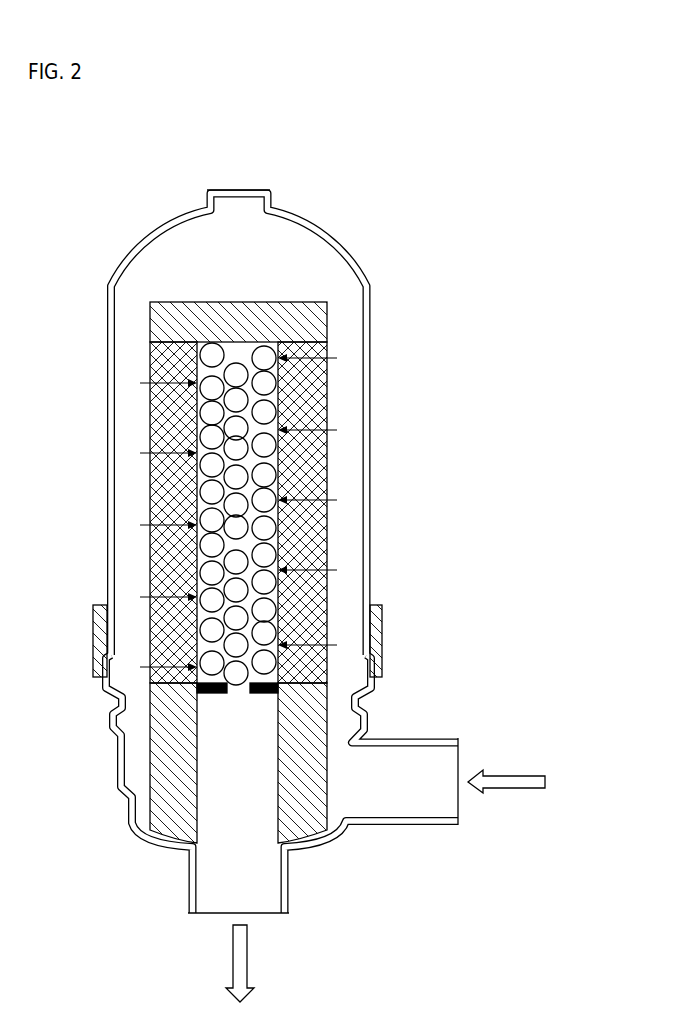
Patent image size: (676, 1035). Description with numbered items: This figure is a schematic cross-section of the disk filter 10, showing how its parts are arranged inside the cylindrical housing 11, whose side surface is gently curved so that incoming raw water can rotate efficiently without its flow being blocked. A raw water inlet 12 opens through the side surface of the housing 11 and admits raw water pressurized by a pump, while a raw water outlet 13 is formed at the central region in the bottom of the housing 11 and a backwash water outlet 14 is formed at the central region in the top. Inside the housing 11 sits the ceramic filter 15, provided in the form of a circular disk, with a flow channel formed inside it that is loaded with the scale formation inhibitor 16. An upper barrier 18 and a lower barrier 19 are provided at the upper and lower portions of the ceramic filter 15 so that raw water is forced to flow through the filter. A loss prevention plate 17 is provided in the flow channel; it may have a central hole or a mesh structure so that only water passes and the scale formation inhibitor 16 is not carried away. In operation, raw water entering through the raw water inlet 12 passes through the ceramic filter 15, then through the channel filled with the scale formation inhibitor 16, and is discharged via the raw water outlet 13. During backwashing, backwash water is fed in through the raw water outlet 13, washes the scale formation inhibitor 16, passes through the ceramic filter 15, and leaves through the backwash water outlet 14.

The disk filter 10 is at (362, 133).
The housing 11 is at (343, 248).
The raw water inlet 12 is at (406, 826).
The raw water outlet 13 is at (290, 885).
The backwash water outlet 14 is at (207, 189).
The ceramic filter 15 is at (310, 463).
The scale formation inhibitor 16 is at (273, 383).
The loss prevention plate 17 is at (278, 680).
The upper barrier 18 is at (317, 323).
The lower barrier 19 is at (175, 763).